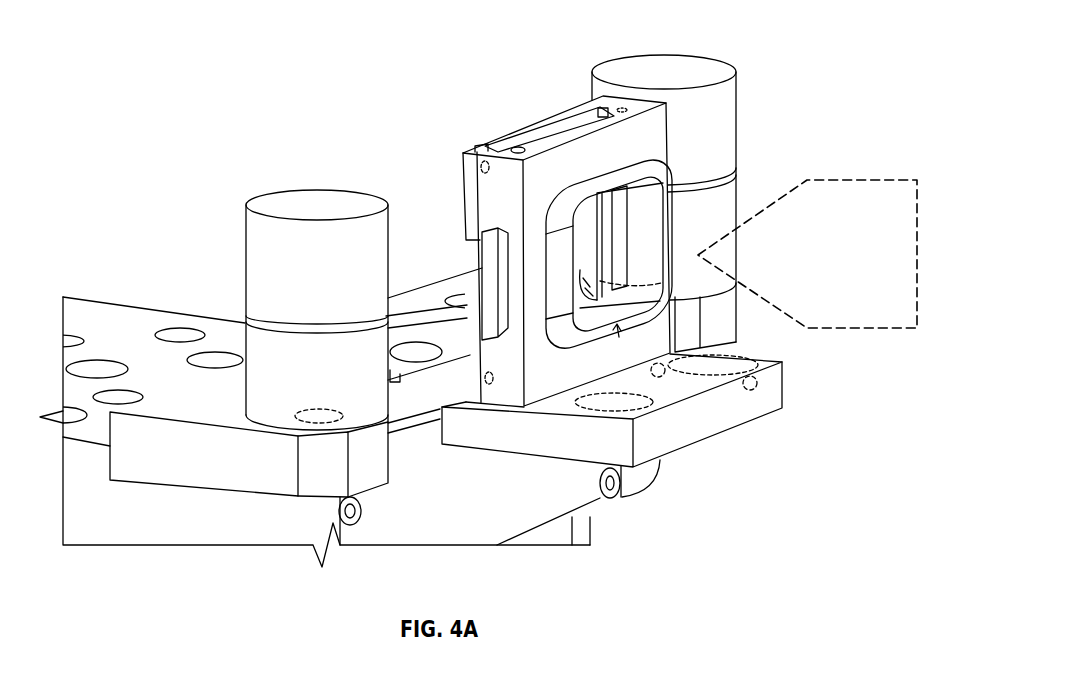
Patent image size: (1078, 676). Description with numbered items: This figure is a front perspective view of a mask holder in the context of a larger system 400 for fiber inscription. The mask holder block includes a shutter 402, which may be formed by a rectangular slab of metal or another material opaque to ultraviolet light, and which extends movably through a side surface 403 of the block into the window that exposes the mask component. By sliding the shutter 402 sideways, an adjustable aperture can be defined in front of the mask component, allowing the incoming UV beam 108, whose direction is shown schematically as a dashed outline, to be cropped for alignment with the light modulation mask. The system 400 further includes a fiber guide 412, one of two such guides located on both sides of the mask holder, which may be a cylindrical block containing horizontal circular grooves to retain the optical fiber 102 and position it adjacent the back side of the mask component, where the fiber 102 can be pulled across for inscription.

The system for fiber inscription 400 is at (482, 285).
The fiber guide 412 is at (307, 188).
The shutter 402 is at (482, 258).
The side surface 403 is at (508, 397).
The optical fiber 102 is at (175, 395).
The UV beam 108 is at (870, 180).